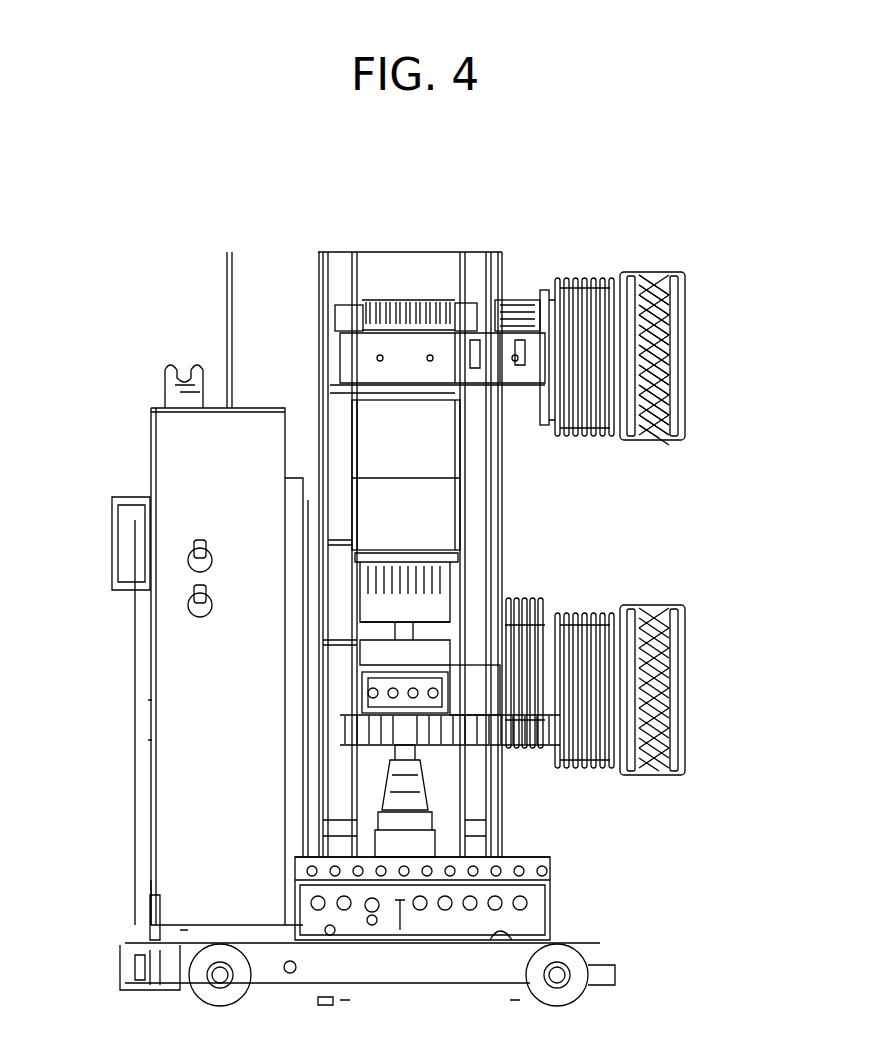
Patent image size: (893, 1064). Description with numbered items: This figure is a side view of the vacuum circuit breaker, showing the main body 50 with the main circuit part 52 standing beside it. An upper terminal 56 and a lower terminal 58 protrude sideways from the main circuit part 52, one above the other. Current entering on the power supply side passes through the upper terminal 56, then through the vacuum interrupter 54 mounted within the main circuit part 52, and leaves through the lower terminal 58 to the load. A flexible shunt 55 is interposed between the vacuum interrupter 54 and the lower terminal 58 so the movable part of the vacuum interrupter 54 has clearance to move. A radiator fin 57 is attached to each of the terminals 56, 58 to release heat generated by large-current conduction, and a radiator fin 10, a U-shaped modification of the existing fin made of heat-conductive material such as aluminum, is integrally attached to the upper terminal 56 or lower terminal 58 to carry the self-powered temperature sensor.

The radiator fin 10 is at (508, 300).
The main body 50 is at (190, 470).
The main circuit part 52 is at (500, 515).
The vacuum interrupter 54 is at (440, 455).
The flexible shunt 55 is at (428, 640).
The upper terminal 56 is at (665, 272).
The radiator fin 57 is at (405, 300).
The lower terminal 58 is at (660, 775).